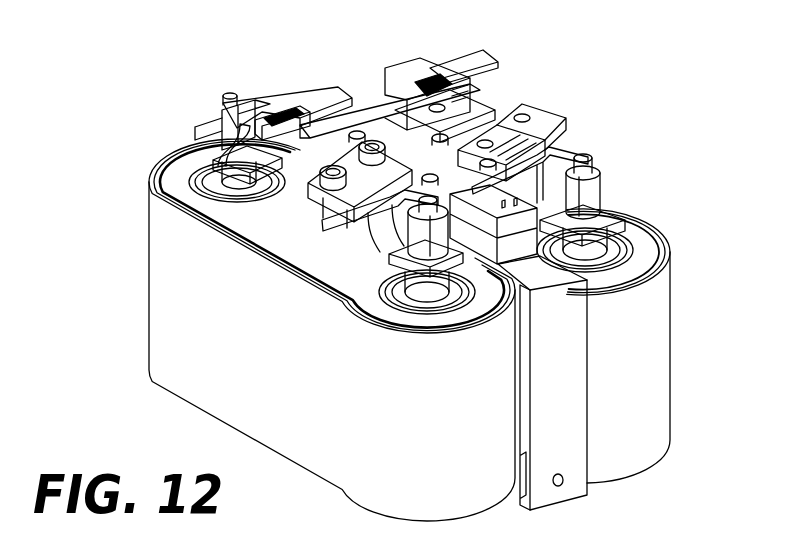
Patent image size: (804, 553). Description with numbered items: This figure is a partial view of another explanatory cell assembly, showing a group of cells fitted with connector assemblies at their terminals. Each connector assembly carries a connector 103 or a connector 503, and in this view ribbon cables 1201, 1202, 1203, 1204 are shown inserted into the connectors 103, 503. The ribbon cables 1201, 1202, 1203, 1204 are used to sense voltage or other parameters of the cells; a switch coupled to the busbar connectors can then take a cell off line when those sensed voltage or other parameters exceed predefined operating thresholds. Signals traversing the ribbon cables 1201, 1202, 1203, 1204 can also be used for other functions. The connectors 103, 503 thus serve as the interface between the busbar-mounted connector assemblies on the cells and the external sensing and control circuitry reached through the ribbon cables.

The connector 503 is at (282, 103).
The ribbon cable 1201 is at (485, 55).
The ribbon cable 1202 is at (313, 98).
The connector 103 is at (540, 128).
The ribbon cable 1203 is at (543, 140).
The ribbon cable 1204 is at (338, 230).